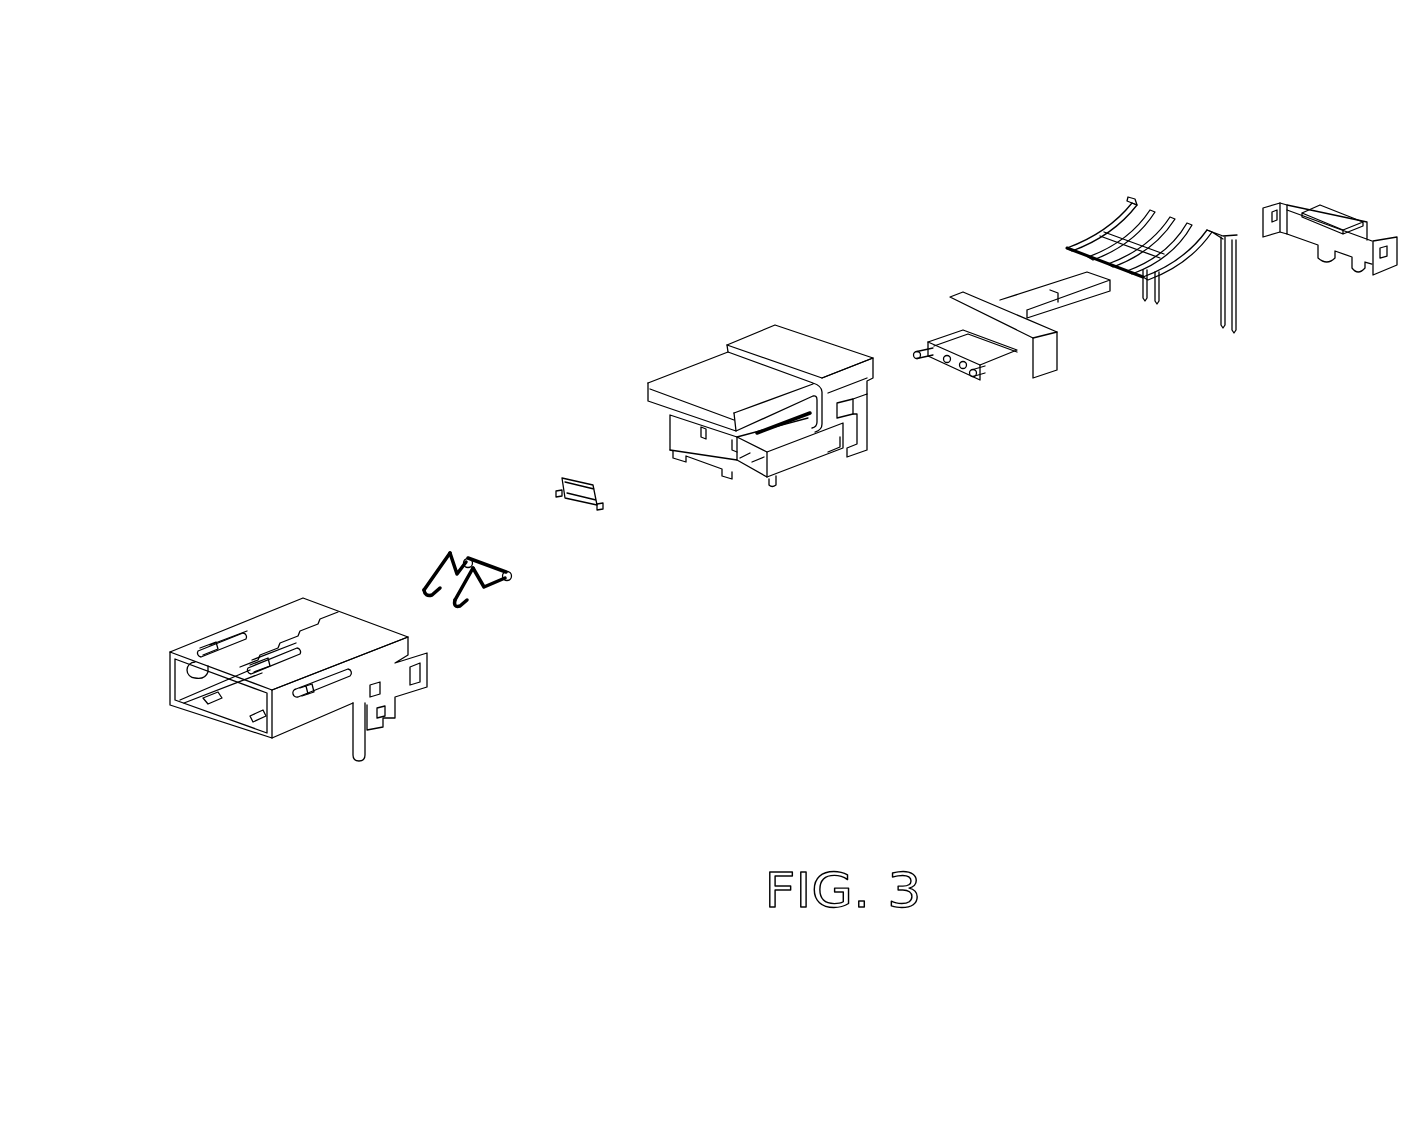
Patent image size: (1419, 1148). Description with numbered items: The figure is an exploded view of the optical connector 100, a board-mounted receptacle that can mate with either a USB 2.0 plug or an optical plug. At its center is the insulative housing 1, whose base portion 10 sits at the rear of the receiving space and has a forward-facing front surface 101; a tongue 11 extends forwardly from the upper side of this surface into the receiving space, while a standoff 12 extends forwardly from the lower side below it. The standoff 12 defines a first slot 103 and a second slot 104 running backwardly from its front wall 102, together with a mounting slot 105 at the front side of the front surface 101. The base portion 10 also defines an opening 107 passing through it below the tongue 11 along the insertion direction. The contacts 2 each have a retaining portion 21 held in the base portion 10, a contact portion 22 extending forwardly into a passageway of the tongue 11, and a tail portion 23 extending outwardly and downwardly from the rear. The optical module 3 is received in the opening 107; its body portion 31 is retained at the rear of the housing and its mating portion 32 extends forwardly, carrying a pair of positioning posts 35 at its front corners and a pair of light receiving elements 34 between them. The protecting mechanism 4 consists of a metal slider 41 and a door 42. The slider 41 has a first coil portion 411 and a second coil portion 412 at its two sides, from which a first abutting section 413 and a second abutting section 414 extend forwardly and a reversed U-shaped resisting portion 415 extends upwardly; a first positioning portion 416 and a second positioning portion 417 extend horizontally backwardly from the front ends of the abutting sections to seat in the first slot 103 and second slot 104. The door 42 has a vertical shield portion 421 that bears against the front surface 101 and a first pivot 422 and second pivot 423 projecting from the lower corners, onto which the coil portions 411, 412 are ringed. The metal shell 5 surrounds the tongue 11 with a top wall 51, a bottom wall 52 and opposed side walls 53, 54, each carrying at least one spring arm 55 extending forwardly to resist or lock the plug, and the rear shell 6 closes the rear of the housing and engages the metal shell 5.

The optical connector 100 is at (1396, 270).
The insulative housing 1 is at (708, 334).
The base portion 10 is at (860, 423).
The tongue 11 is at (707, 372).
The standoff 12 is at (799, 461).
The front surface 101 is at (853, 402).
The front wall 102 is at (758, 480).
The first slot 103 is at (737, 470).
The second slot 104 is at (698, 437).
The mounting slot 105 is at (790, 425).
The opening 107 is at (836, 436).
The contacts 2 is at (1090, 213).
The retaining portion 21 is at (1207, 228).
The contact portion 22 is at (1160, 267).
The tail portion 23 is at (1238, 302).
The optical module 3 is at (999, 280).
The body portion 31 is at (1047, 363).
The mating portion 32 is at (952, 340).
The light receiving elements 34 is at (965, 364).
The positioning posts 35 is at (980, 375).
The protecting mechanism 4 is at (666, 553).
The slider 41 is at (450, 550).
The first coil portion 411 is at (515, 582).
The second coil portion 412 is at (462, 550).
The first abutting section 413 is at (468, 593).
The second abutting section 414 is at (435, 565).
The resisting portion 415 is at (488, 552).
The first positioning portion 416 is at (468, 605).
The second positioning portion 417 is at (423, 590).
The door 42 is at (567, 475).
The shield portion 421 is at (617, 490).
The first pivot 422 is at (600, 508).
The second pivot 423 is at (558, 493).
The metal shell 5 is at (186, 612).
The top wall 51 is at (257, 623).
The bottom wall 52 is at (237, 717).
The side wall 53 is at (277, 725).
The side wall 54 is at (178, 677).
The spring arm 55 is at (198, 712).
The rear shell 6 is at (1259, 186).